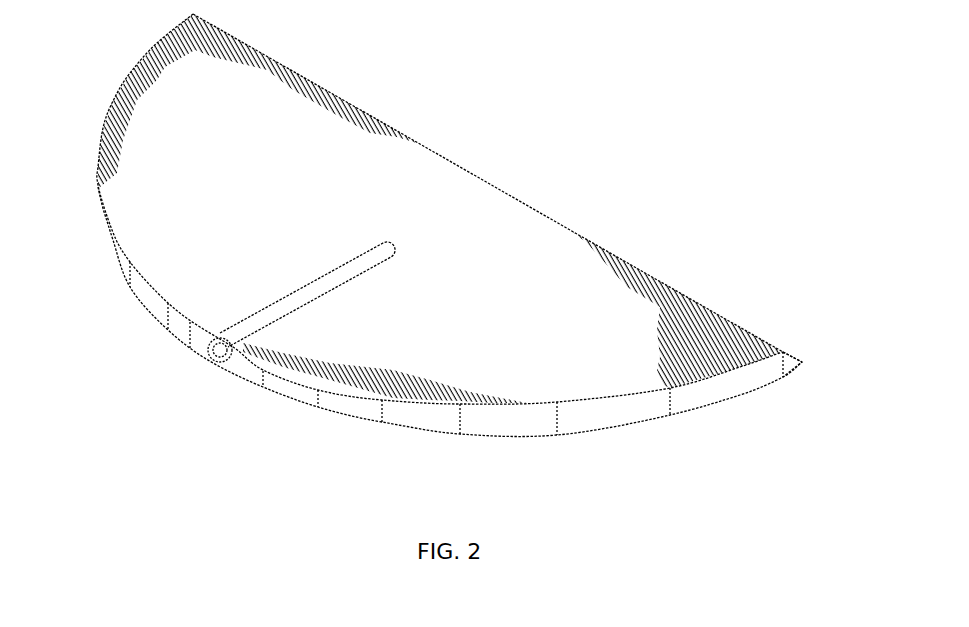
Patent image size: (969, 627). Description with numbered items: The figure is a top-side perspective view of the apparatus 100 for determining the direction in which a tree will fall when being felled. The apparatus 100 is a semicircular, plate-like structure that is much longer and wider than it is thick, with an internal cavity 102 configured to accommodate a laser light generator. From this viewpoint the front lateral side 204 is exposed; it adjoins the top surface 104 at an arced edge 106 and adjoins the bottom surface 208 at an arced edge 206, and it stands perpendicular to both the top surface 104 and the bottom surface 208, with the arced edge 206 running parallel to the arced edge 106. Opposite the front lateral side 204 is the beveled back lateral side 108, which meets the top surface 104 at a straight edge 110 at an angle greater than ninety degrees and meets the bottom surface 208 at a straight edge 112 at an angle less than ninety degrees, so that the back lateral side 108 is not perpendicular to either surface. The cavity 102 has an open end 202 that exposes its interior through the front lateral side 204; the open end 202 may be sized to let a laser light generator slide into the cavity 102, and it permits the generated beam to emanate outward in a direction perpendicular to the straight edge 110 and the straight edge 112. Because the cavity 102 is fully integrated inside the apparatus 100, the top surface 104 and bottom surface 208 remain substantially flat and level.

The apparatus 100 is at (473, 260).
The cavity 102 is at (247, 313).
The top surface 104 is at (413, 167).
The arced edge 106 is at (560, 402).
The back lateral side 108 is at (790, 332).
The straight edge 110 is at (493, 183).
The straight edge 112 is at (805, 365).
The open end 202 is at (216, 352).
The front lateral side 204 is at (642, 403).
The arced edge 206 is at (527, 435).
The bottom surface 208 is at (300, 430).